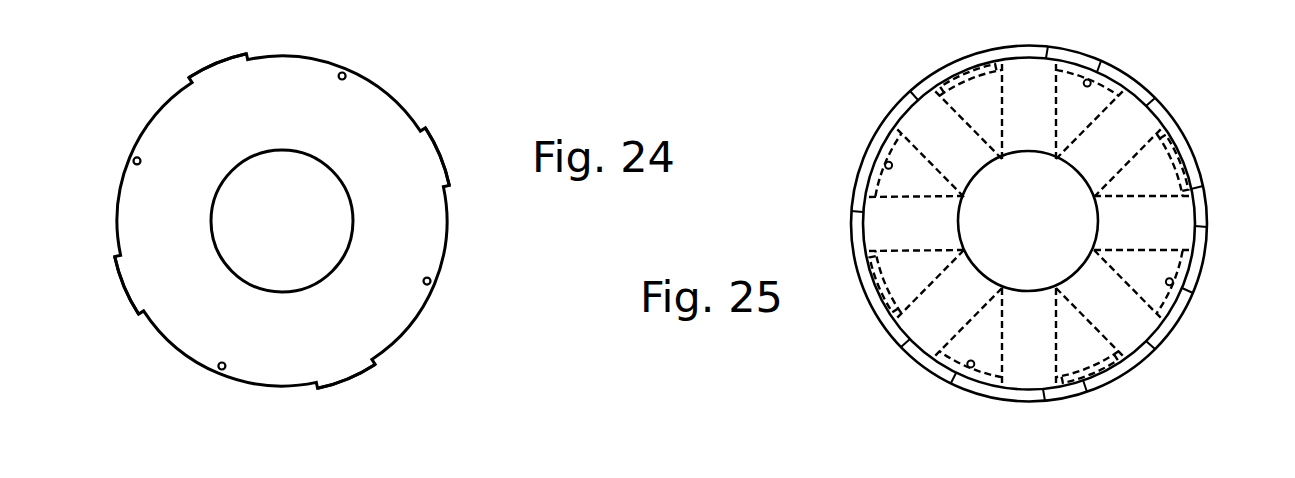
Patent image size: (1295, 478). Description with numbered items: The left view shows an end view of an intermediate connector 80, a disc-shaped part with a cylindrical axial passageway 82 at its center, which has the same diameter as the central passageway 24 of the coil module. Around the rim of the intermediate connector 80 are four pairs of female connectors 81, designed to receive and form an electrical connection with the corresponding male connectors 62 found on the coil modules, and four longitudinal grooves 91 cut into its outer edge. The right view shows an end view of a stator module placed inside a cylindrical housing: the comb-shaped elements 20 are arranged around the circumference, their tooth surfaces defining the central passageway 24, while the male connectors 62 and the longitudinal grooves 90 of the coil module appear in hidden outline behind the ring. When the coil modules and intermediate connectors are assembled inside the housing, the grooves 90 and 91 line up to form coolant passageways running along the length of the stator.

In FIG. 25, the comb-shaped element 20 is at (1043, 45).
In FIG. 25, the central passageway 24 is at (990, 237).
In FIG. 25, the male connector 62 is at (1090, 78).
In FIG. 24, the intermediate connector 80 is at (403, 357).
In FIG. 25, the intermediate connector 80 is at (998, 402).
In FIG. 24, the female connector 81 is at (345, 76).
In FIG. 24, the cylindrical axial passageway 82 is at (318, 220).
In FIG. 25, the groove 90 is at (963, 64).
In FIG. 24, the longitudinal groove 91 is at (222, 77).